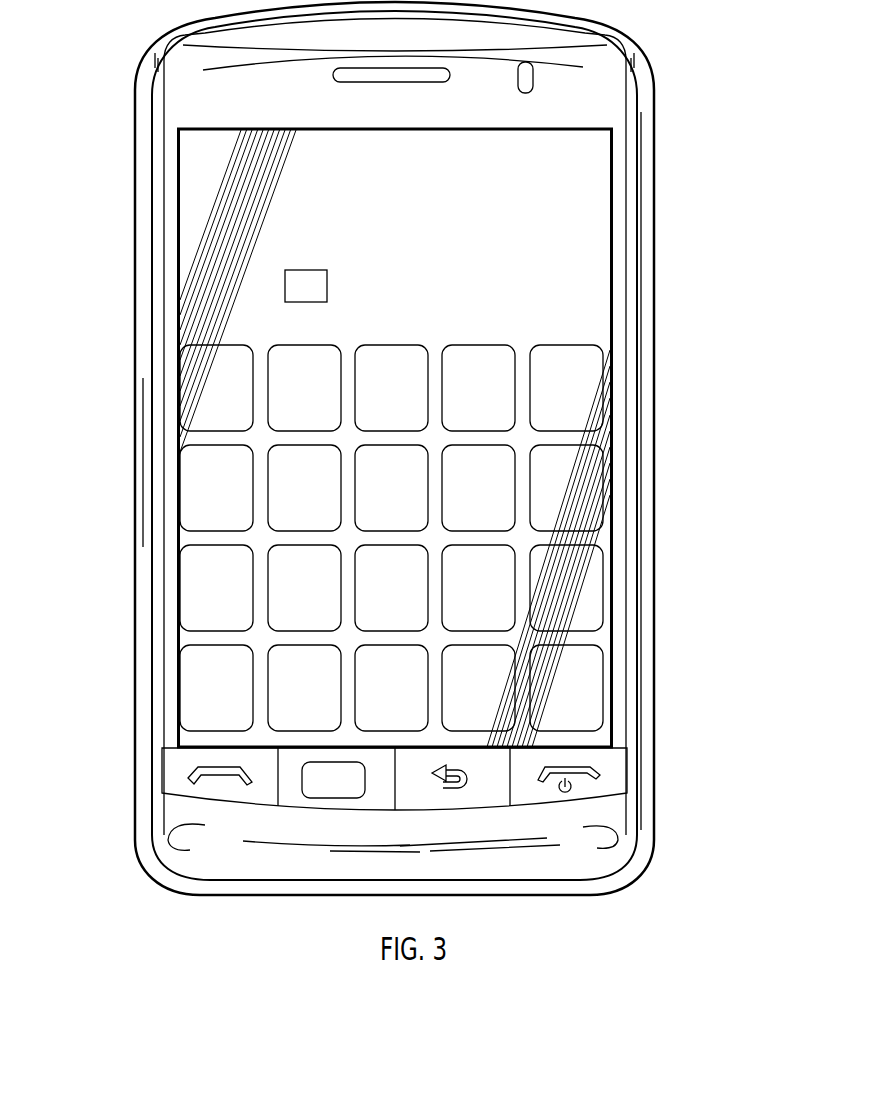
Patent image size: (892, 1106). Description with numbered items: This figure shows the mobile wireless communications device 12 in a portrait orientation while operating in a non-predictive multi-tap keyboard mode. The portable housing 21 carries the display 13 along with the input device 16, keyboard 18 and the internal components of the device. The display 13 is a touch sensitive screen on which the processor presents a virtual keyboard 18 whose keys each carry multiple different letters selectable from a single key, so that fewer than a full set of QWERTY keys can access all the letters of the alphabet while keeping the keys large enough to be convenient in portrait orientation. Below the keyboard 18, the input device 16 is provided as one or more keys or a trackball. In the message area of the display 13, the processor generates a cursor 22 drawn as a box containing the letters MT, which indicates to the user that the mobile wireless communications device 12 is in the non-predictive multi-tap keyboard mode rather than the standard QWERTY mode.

The mobile wireless communications device 12 is at (89, 639).
The display 13 is at (600, 150).
The input device 16 is at (532, 798).
The keyboard 18 is at (187, 657).
The portable housing 21 is at (136, 141).
The cursor 22 is at (327, 283).